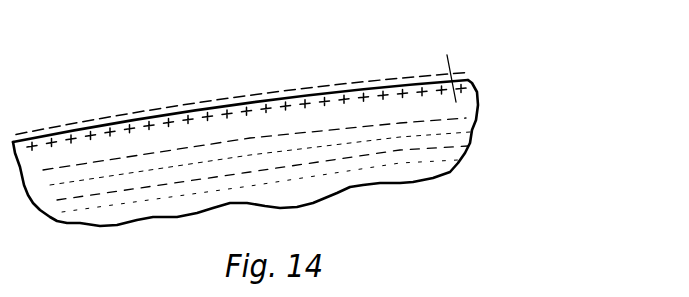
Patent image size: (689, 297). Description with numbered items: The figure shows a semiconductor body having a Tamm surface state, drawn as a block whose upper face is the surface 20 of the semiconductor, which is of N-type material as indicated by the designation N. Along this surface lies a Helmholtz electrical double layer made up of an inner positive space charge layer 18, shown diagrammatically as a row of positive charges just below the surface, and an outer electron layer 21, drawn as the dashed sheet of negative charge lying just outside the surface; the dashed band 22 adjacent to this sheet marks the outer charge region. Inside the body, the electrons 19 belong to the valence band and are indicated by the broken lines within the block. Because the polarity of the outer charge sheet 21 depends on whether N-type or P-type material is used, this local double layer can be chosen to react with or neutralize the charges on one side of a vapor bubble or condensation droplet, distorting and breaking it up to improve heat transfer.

The positive space charge layer 18 is at (400, 85).
The electrons 19 is at (402, 152).
The surface 20 is at (330, 67).
The outer electron layer 21 is at (236, 98).
The boundary layer 22 is at (148, 104).
The N-type material N is at (449, 66).